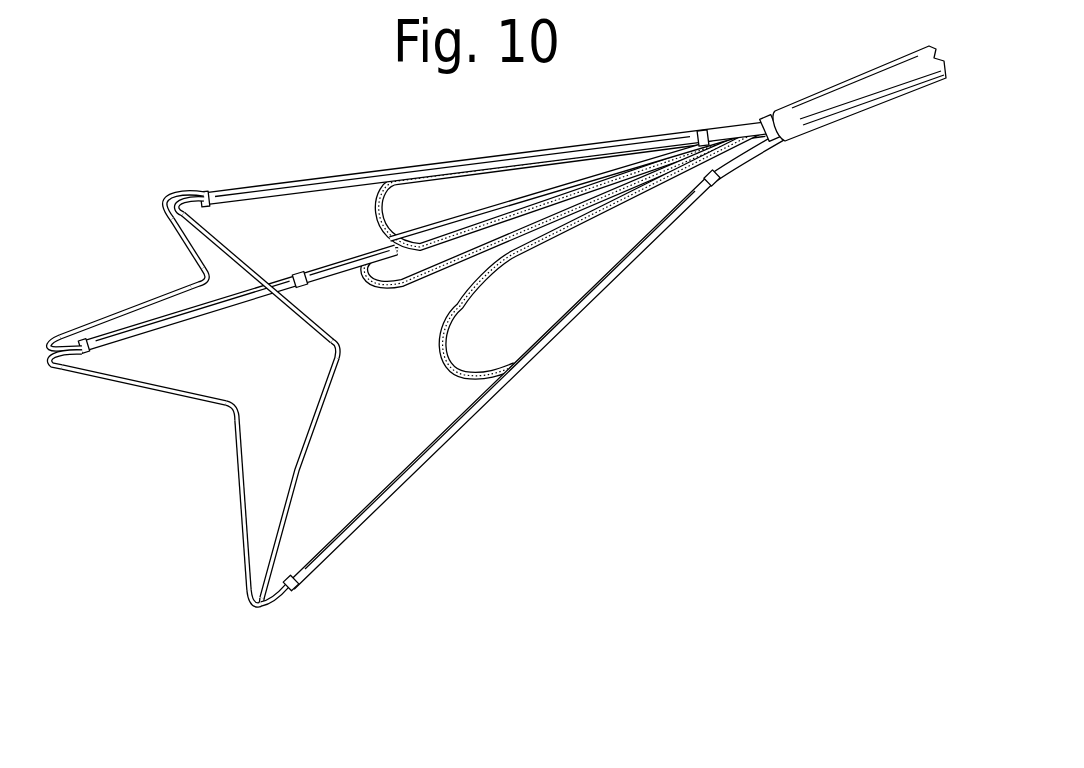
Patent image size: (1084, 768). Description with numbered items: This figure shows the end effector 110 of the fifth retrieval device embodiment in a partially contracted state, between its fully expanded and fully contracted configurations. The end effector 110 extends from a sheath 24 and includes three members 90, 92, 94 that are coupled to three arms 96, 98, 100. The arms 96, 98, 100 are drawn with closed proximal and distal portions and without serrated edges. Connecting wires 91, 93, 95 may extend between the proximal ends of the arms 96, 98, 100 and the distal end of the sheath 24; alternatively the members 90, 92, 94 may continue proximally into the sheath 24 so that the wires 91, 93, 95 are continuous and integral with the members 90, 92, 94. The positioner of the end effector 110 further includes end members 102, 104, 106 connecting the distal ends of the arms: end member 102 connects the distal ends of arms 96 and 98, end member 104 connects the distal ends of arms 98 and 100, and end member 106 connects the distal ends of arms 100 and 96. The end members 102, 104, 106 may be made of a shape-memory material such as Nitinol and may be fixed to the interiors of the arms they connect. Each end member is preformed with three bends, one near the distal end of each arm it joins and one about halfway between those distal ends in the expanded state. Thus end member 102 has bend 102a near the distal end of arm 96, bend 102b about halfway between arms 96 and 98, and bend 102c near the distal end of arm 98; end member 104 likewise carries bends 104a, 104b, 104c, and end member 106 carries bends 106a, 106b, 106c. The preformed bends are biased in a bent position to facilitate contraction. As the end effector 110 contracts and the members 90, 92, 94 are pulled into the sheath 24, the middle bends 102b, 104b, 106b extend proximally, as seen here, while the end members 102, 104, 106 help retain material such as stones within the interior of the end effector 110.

The sheath 24 is at (850, 92).
The member 90 is at (378, 214).
The connecting wire 91 is at (768, 121).
The member 92 is at (370, 279).
The connecting wire 93 is at (701, 131).
The member 94 is at (454, 350).
The connecting wire 95 is at (742, 164).
The arm 96 is at (296, 183).
The arm 98 is at (190, 316).
The arm 100 is at (378, 509).
The end member 102 is at (130, 303).
The bend 102a is at (164, 203).
The bend 102b is at (200, 270).
The bend 102c is at (50, 334).
The end member 104 is at (238, 491).
The second wire distal bend 104a is at (47, 374).
The bend 104b is at (222, 411).
The second wire lower bend 104c is at (250, 602).
The end member 106 is at (325, 408).
The third wire apex 106a is at (258, 607).
The bend 106b is at (345, 346).
The third wire proximal bend 106c is at (195, 211).
The end effector 110 is at (494, 343).